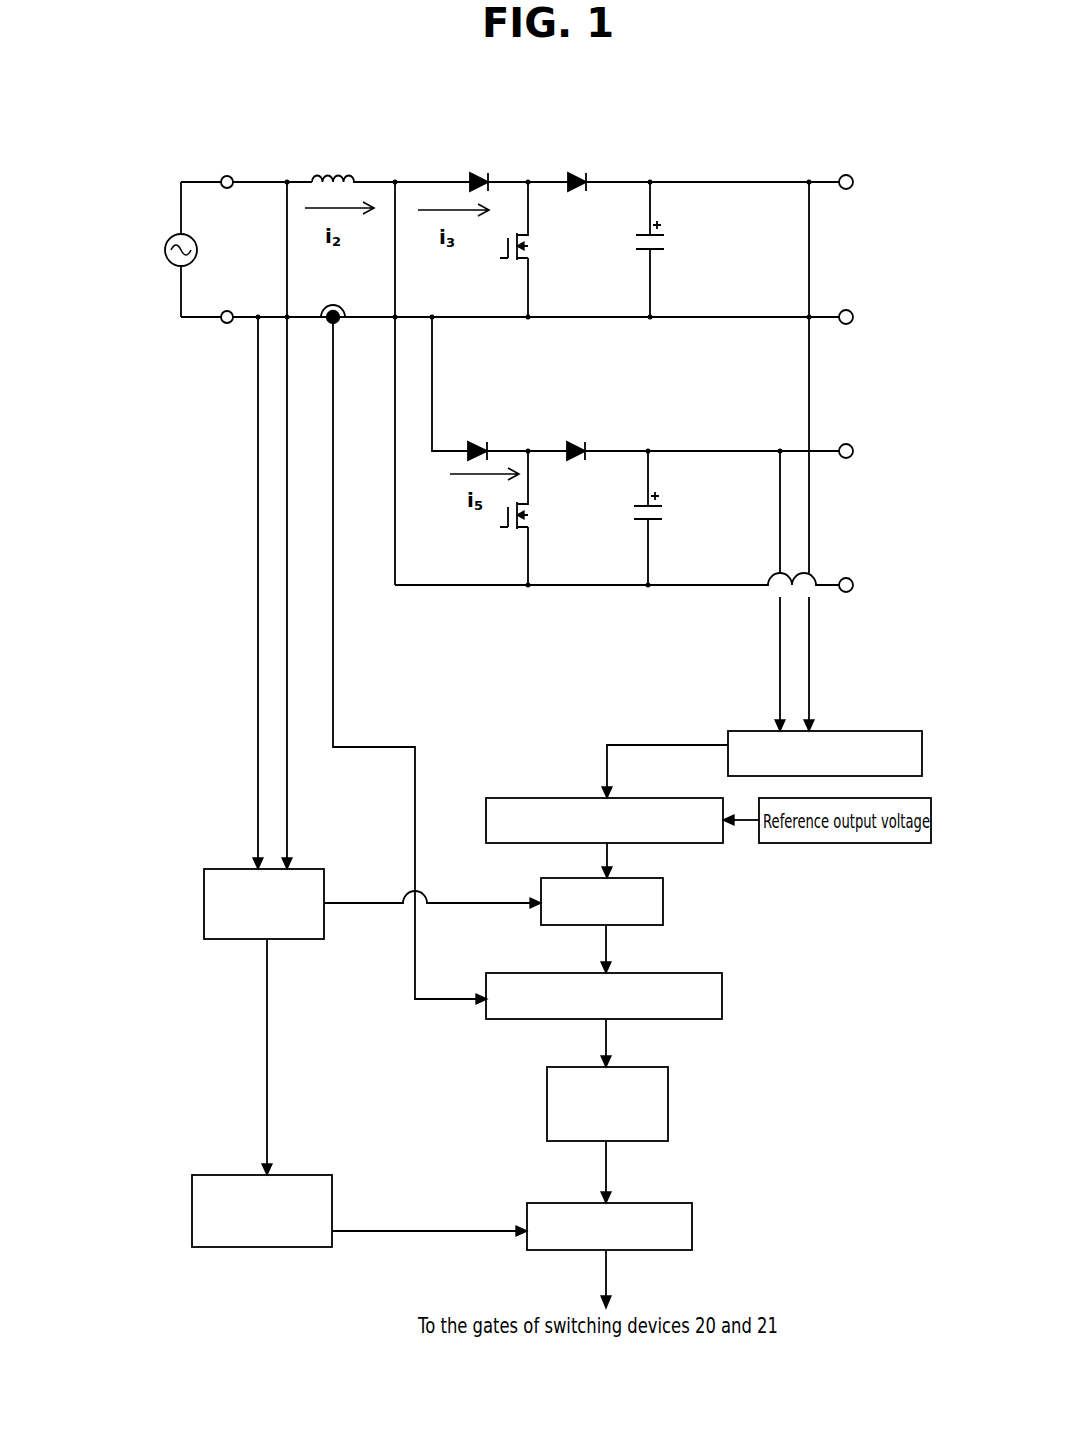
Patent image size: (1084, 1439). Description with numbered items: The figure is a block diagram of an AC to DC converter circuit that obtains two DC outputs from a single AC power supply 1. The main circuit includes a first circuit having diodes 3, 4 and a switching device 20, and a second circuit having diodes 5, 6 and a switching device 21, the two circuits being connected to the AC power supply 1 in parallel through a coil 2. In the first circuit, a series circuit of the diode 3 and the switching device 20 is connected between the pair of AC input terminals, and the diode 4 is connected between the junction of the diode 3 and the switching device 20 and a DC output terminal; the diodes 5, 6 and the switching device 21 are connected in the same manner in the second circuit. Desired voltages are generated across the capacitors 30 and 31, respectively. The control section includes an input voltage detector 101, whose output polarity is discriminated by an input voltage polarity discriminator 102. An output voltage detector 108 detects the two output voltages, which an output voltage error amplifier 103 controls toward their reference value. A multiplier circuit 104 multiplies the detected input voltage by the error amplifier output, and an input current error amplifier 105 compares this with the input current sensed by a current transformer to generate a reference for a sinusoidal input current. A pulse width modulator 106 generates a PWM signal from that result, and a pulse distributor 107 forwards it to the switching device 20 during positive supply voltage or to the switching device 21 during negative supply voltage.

The AC power supply 1 is at (157, 250).
The coil 2 is at (330, 163).
The diode 3 is at (478, 172).
The diode 4 is at (577, 172).
The diode 5 is at (476, 440).
The diode 6 is at (575, 440).
The switching device 20 is at (538, 244).
The switching device 21 is at (538, 513).
The capacitor 30 is at (670, 242).
The capacitor 31 is at (668, 511).
The input voltage detector 101 is at (264, 887).
The input voltage polarity discriminator 102 is at (262, 1194).
The output voltage error amplifier 103 is at (604, 804).
The multiplier circuit 104 is at (602, 885).
The input current error amplifier 105 is at (604, 979).
The pulse width modulator 106 is at (607, 1087).
The pulse distributor 107 is at (609, 1209).
The output voltage detector 108 is at (825, 738).